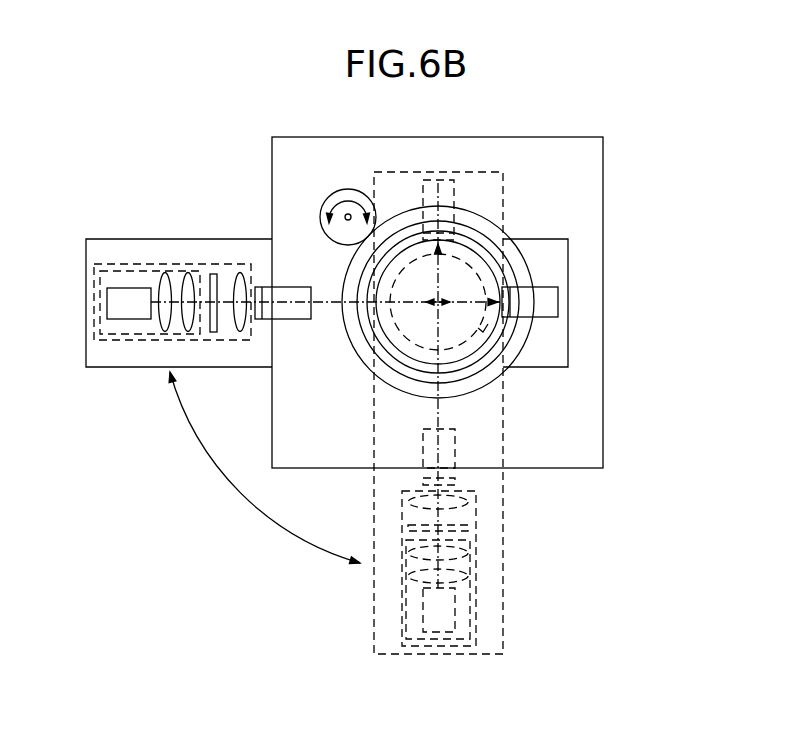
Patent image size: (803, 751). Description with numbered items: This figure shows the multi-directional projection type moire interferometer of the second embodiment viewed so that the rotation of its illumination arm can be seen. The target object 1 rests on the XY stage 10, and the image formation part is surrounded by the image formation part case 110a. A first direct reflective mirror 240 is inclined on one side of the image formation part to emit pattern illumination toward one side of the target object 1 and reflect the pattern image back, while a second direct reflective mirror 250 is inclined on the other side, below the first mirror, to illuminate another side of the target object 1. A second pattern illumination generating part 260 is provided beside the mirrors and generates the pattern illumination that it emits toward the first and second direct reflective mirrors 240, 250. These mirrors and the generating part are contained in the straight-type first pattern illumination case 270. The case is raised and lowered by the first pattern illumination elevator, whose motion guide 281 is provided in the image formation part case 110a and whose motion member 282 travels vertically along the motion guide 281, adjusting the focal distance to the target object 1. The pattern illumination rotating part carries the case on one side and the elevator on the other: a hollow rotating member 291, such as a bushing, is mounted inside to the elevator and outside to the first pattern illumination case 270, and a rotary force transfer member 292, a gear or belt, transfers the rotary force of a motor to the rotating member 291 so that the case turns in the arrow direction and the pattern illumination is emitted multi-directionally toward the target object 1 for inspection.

The target object 1 is at (497, 342).
The XY stage 10 is at (272, 402).
The image formation part case 110a is at (463, 247).
The first direct reflective mirror 240 is at (290, 319).
The second direct reflective mirror 250 is at (447, 180).
The second pattern illumination generating part 260 is at (168, 256).
The first pattern illumination case 270 is at (238, 239).
The motion guide 281 is at (488, 250).
The motion member 282 is at (510, 268).
The rotating member 291 is at (362, 285).
The rotary force transfer member 292 is at (345, 192).